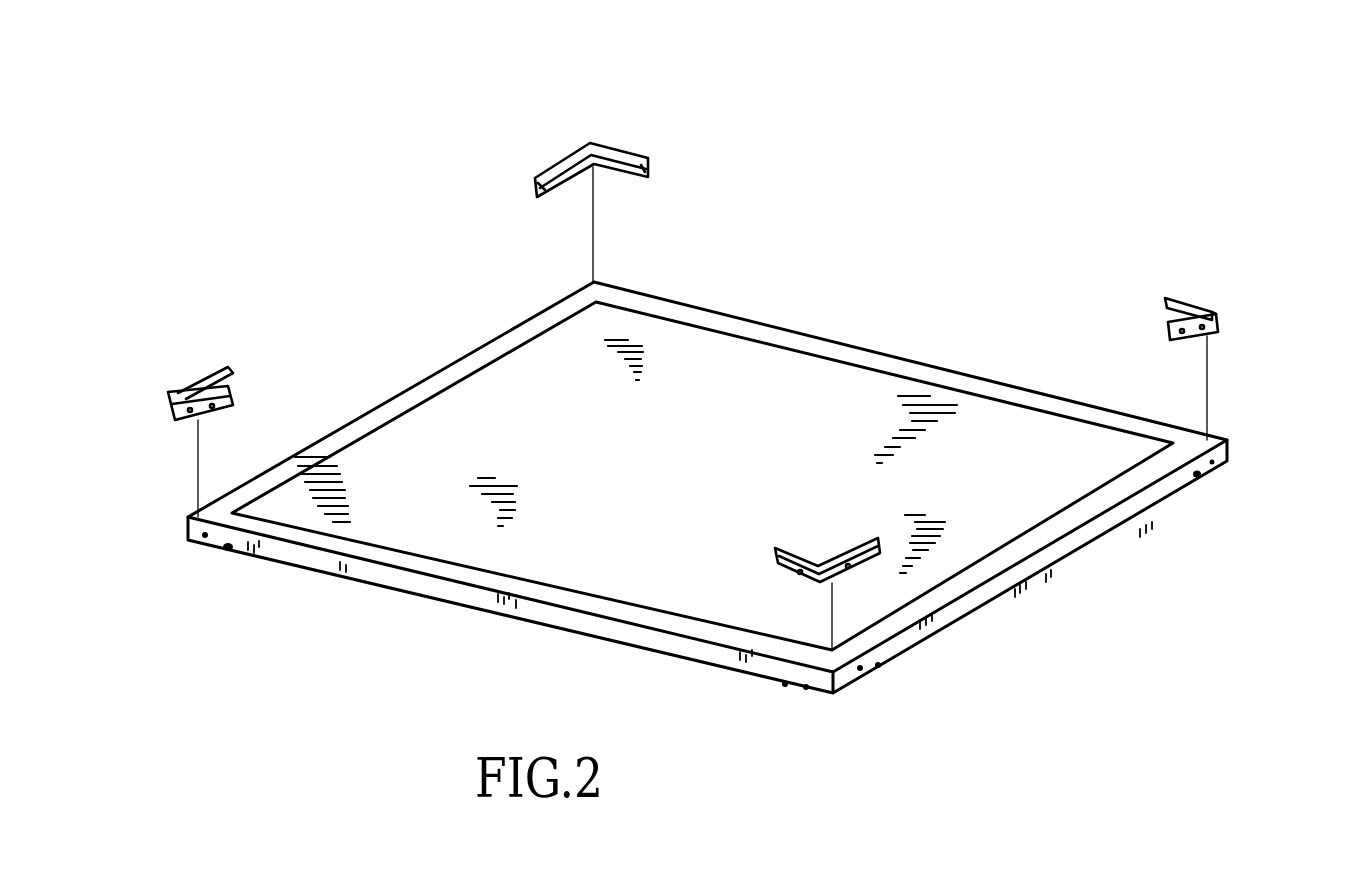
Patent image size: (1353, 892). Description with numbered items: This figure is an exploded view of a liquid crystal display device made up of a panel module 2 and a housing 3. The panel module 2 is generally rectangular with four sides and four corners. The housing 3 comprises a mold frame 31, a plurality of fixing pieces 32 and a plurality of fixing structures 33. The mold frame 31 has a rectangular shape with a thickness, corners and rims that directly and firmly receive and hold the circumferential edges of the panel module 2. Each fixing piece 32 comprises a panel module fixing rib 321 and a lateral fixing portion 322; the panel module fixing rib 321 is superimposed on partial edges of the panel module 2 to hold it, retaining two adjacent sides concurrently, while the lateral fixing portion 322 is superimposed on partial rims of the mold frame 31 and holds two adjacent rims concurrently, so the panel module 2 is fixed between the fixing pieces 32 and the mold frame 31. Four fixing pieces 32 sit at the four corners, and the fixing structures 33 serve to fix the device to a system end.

The panel module 2 is at (1028, 513).
The housing 3 is at (1273, 386).
The mold frame 31 is at (968, 608).
The fixing piece 32 is at (1211, 302).
The fixing structure 33 is at (1199, 475).
The panel module fixing rib 321 is at (612, 146).
The lateral fixing portion 322 is at (183, 415).